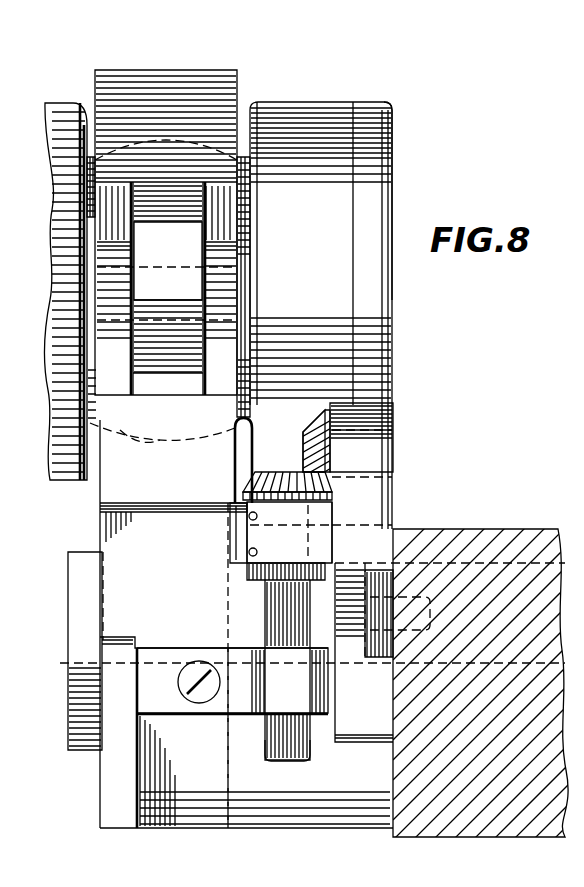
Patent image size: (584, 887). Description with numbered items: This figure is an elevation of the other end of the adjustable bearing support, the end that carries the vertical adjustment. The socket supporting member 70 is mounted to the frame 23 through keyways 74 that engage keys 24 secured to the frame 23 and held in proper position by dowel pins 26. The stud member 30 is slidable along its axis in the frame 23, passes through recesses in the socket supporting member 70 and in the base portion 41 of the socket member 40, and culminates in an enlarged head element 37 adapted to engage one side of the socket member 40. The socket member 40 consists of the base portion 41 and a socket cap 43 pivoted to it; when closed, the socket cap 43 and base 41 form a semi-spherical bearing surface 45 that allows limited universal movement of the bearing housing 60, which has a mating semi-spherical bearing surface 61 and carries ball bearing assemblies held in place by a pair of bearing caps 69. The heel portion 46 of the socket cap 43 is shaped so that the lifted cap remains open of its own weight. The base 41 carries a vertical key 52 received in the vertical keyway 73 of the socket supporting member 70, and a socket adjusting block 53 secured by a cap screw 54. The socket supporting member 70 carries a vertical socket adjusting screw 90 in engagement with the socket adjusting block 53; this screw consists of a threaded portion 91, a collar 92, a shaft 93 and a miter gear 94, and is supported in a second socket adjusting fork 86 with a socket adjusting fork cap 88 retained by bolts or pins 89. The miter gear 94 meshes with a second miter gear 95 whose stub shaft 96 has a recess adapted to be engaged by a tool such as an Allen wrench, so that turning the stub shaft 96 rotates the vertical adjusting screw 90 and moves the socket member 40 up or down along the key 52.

The frame 23 is at (490, 536).
The keys 24 is at (383, 660).
The dowel pins 26 is at (380, 570).
The stud member 30 is at (120, 565).
The enlarged head element 37 is at (88, 750).
The socket member 40 is at (92, 522).
The base portion 41 is at (145, 795).
The socket cap 43 is at (240, 80).
The semi-spherical bearing surface 45 is at (168, 436).
The heel portion 46 is at (174, 249).
The vertical key 52 is at (237, 432).
The socket adjusting block 53 is at (216, 728).
The cap screw 54 is at (203, 702).
The bearing housing 60 is at (304, 104).
The semi-spherical bearing surface 61 is at (128, 438).
The bearing caps 69 is at (380, 106).
The socket supporting member 70 is at (394, 410).
The vertical keyway 73 is at (232, 758).
The keyways 74 is at (352, 650).
The socket adjusting fork 86 is at (335, 528).
The socket adjusting fork cap 88 is at (238, 535).
The bolts or pins 89 is at (249, 514).
The vertical socket adjusting screw 90 is at (314, 753).
The threaded portion 91 is at (300, 764).
The collar 92 is at (247, 570).
The shaft 93 is at (336, 512).
The miter gear 94 is at (250, 484).
The second miter gear 95 is at (330, 450).
The stub shaft 96 is at (384, 436).